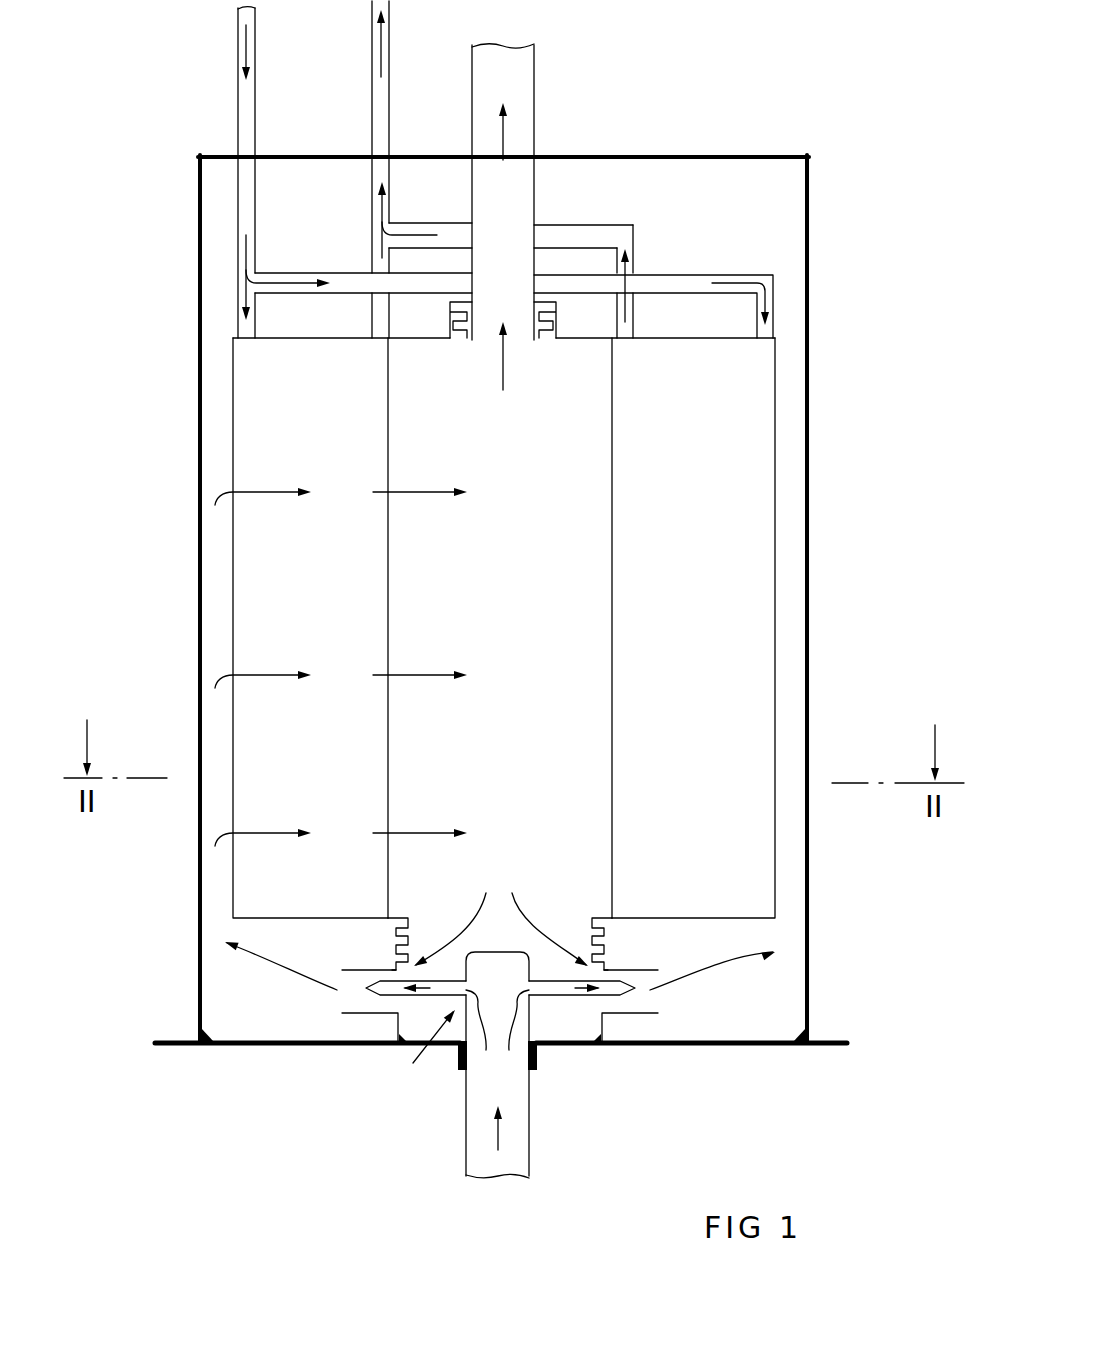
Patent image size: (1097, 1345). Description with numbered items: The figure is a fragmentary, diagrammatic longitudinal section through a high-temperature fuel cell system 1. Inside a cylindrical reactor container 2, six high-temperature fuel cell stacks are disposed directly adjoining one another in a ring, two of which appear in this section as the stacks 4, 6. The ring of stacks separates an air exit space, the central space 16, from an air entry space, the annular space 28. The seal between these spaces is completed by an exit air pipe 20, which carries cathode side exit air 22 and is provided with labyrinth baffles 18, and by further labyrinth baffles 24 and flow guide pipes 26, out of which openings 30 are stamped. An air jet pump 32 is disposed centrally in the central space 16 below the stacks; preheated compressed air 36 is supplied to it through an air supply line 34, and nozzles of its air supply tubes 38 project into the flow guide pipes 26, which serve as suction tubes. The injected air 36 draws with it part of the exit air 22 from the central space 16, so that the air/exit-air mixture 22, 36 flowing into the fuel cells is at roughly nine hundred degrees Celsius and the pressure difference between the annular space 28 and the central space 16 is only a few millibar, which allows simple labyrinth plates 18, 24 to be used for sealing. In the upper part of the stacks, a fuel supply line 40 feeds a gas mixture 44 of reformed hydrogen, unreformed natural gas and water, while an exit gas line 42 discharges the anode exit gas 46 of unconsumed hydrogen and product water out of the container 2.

The high-temperature fuel cell system 1 is at (830, 128).
The cylindrical reactor container 2 is at (809, 275).
The high-temperature fuel cell stack 4 is at (775, 441).
The high-temperature fuel cell stack 6 is at (233, 457).
The central space 16 is at (545, 612).
The labyrinth baffles 18 is at (466, 348).
The exit air pipe 20 is at (537, 68).
The cathode side exit air 22 is at (503, 133).
The labyrinth baffles 24 is at (418, 928).
The flow guide pipes 26 is at (366, 968).
The annular space 28 is at (217, 400).
The openings 30 is at (343, 1003).
The air jet pump 32 is at (408, 1102).
The air supply line 34 is at (531, 1105).
The preheated compressed air 36 is at (578, 1147).
The air supply tubes 38 is at (390, 1003).
The fuel supply line 40 is at (257, 223).
The exit gas line 42 is at (437, 223).
The gas mixture 44 is at (248, 37).
The exit gas 46 is at (382, 50).